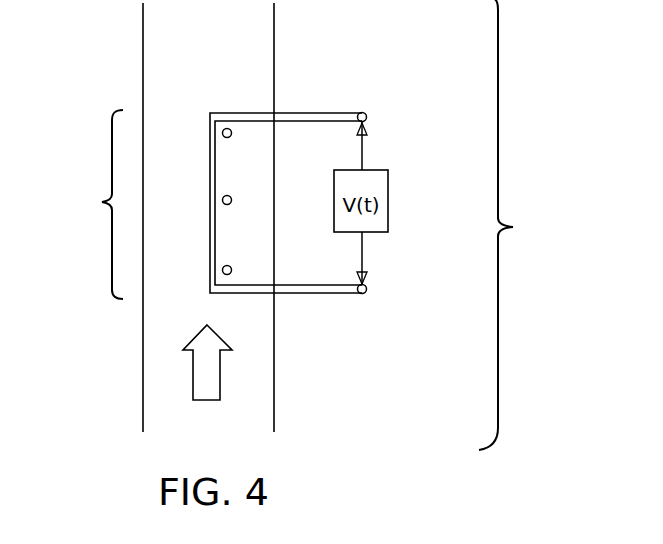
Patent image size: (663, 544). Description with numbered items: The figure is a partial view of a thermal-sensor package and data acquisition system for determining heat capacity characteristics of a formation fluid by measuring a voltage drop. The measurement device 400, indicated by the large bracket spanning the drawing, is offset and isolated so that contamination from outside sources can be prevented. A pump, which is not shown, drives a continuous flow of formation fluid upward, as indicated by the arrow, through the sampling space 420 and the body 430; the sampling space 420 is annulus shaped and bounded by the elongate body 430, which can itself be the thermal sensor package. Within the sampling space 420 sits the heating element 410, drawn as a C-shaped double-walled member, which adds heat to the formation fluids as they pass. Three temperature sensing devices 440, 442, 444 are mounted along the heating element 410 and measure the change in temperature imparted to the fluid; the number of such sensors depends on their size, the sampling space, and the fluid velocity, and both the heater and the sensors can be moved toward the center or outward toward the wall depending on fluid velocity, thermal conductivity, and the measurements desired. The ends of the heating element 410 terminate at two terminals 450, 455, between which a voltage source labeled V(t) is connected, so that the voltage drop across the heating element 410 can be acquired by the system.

The measurement device 400 is at (521, 225).
The heating element 410 is at (210, 222).
The sampling space 420 is at (90, 204).
The elongate body 430 is at (143, 55).
The temperature sensing device 440 is at (229, 129).
The temperature sensing device 442 is at (229, 196).
The temperature sensing device 444 is at (229, 266).
The terminal 450 is at (367, 117).
The terminal 455 is at (367, 289).